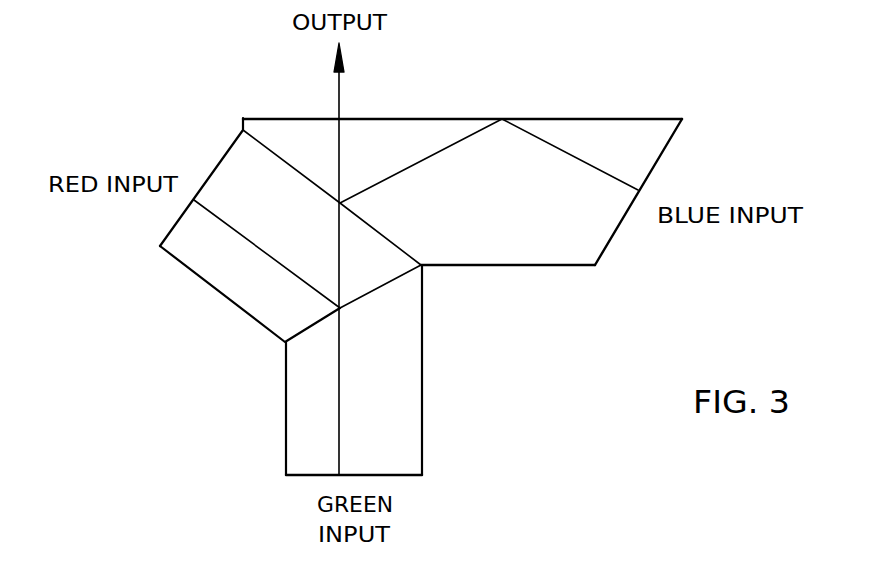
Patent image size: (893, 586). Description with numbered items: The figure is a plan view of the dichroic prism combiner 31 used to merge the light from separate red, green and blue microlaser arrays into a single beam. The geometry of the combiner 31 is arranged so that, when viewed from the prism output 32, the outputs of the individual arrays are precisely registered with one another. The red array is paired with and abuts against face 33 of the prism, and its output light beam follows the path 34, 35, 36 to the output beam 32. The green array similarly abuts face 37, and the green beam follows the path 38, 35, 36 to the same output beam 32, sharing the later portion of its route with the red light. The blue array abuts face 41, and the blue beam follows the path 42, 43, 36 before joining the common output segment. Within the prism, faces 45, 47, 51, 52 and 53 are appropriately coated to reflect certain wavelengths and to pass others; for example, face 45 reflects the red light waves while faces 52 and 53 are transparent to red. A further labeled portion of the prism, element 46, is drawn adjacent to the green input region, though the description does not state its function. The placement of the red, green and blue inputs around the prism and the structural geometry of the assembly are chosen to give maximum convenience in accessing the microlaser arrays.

The dichroic prism combiner 31 is at (403, 99).
The prism output 32 is at (338, 90).
The face 33 is at (217, 168).
The path segment 34 is at (235, 229).
The path segment 35 is at (339, 231).
The path segment 36 is at (342, 136).
The face 37 is at (302, 478).
The path segment 38 is at (341, 420).
The face 41 is at (604, 251).
The path segment 42 is at (602, 172).
The path segment 43 is at (430, 157).
The face 45 is at (318, 322).
The green prism interface 46 is at (380, 288).
The face 47 is at (646, 122).
The face 51 is at (393, 240).
The face 52 is at (365, 227).
The face 53 is at (316, 120).